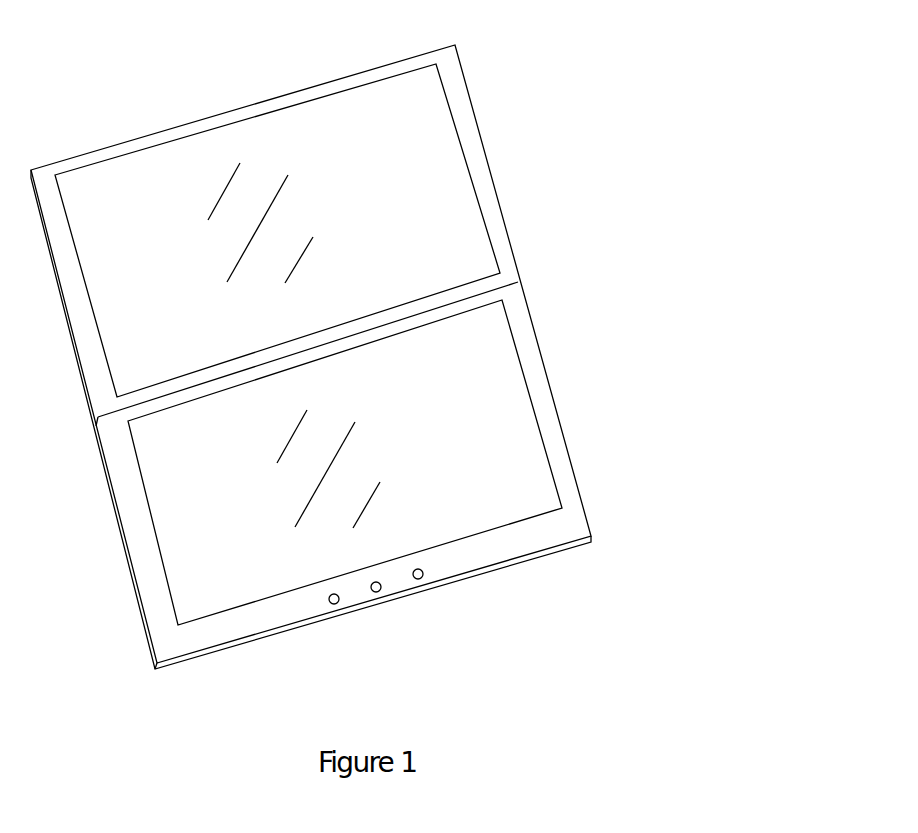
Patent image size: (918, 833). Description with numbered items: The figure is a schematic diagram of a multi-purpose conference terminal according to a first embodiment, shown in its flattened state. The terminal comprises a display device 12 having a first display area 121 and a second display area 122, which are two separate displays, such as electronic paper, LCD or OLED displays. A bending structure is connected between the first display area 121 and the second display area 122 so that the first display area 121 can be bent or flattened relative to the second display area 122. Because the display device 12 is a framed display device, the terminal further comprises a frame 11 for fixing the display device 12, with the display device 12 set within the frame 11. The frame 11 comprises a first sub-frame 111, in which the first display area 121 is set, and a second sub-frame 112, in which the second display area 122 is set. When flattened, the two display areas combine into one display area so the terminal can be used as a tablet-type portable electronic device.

The frame 11 is at (607, 203).
The first sub-frame 111 is at (517, 323).
The second sub-frame 112 is at (487, 193).
The display device 12 is at (242, 264).
The first display area 121 is at (160, 478).
The second display area 122 is at (111, 193).